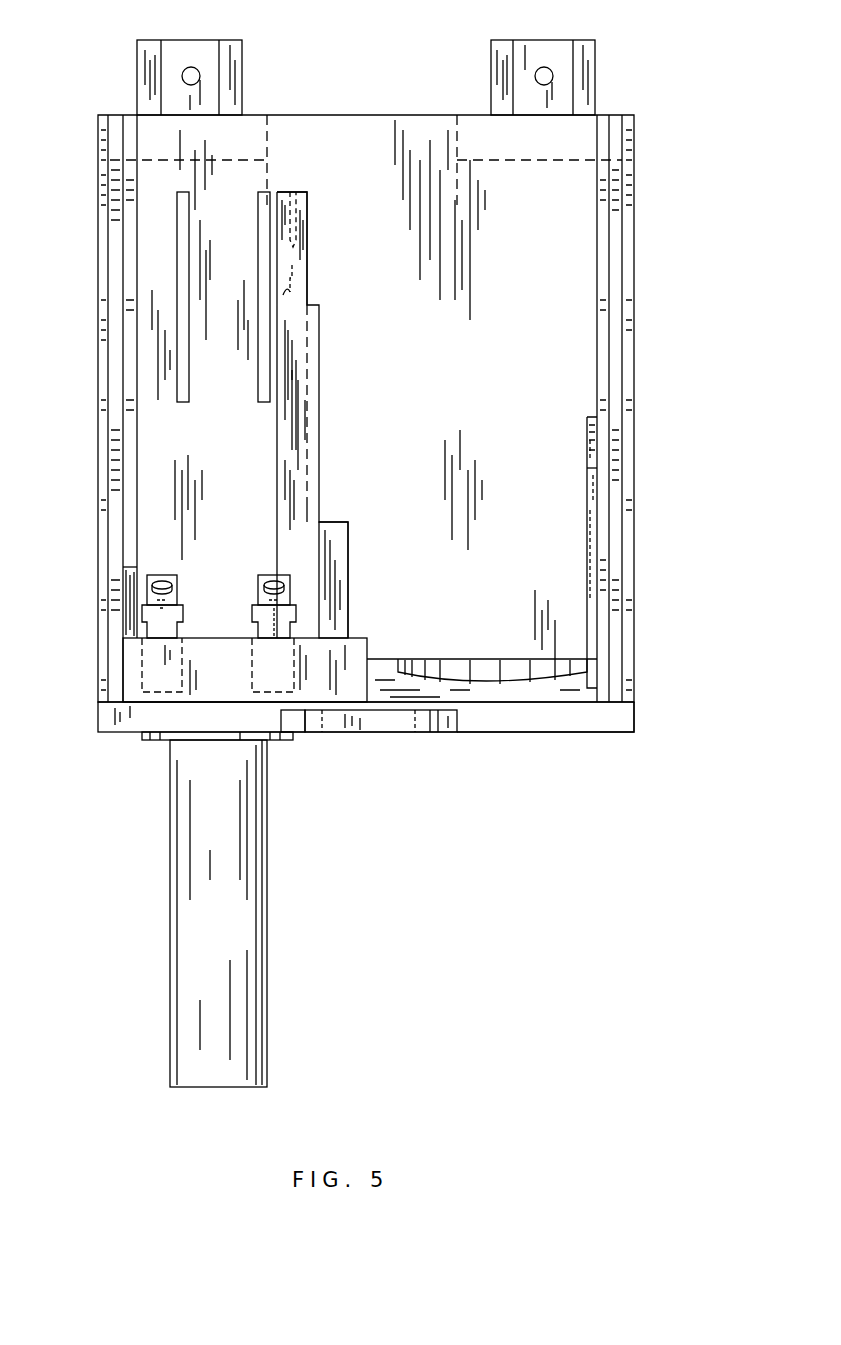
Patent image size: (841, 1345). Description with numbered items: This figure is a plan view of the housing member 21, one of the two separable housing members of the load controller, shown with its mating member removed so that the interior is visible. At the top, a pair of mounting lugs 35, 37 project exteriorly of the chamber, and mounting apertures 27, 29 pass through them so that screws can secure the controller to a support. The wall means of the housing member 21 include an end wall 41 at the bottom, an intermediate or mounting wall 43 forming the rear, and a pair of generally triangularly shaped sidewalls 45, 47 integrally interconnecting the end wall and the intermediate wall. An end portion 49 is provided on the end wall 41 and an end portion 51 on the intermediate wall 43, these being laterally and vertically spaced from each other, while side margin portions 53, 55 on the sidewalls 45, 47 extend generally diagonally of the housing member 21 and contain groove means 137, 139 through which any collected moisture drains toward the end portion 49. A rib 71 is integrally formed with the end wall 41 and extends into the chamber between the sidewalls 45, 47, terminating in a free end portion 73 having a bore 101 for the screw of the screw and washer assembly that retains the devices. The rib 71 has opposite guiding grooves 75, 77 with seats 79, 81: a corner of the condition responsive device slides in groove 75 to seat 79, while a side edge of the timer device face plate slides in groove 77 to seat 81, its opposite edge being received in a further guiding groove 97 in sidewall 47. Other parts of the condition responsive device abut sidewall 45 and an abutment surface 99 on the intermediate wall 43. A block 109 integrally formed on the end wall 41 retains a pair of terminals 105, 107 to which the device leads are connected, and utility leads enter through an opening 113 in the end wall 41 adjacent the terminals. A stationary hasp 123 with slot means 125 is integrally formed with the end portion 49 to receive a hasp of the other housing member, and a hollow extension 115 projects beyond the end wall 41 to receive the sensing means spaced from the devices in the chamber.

The housing member 21 is at (309, 84).
The mounting aperture 27 is at (191, 67).
The mounting aperture 29 is at (544, 67).
The mounting lug 35 is at (152, 40).
The mounting lug 37 is at (580, 40).
The end wall 41 is at (495, 732).
The intermediate wall 43 is at (462, 368).
The sidewall 45 is at (105, 425).
The sidewall 47 is at (637, 425).
The end portion 49 is at (548, 718).
The end portion 51 is at (400, 115).
The side margin portion 53 is at (100, 283).
The side margin portion 55 is at (612, 300).
The rib 71 is at (352, 552).
The free end portion 73 is at (300, 192).
The guiding groove 75 is at (292, 282).
The guiding groove 77 is at (307, 323).
The seat 79 is at (287, 292).
The seat 81 is at (317, 520).
The guiding groove 97 is at (592, 440).
The abutment surface 99 is at (190, 385).
The bore 101 is at (297, 217).
The terminal 105 is at (168, 575).
The terminal 107 is at (260, 575).
The block 109 is at (228, 638).
The opening 113 is at (437, 665).
The hollow extension 115 is at (265, 892).
The stationary hasp 123 is at (340, 728).
The slot means 125 is at (410, 715).
The groove means 137 is at (115, 490).
The groove means 139 is at (615, 515).